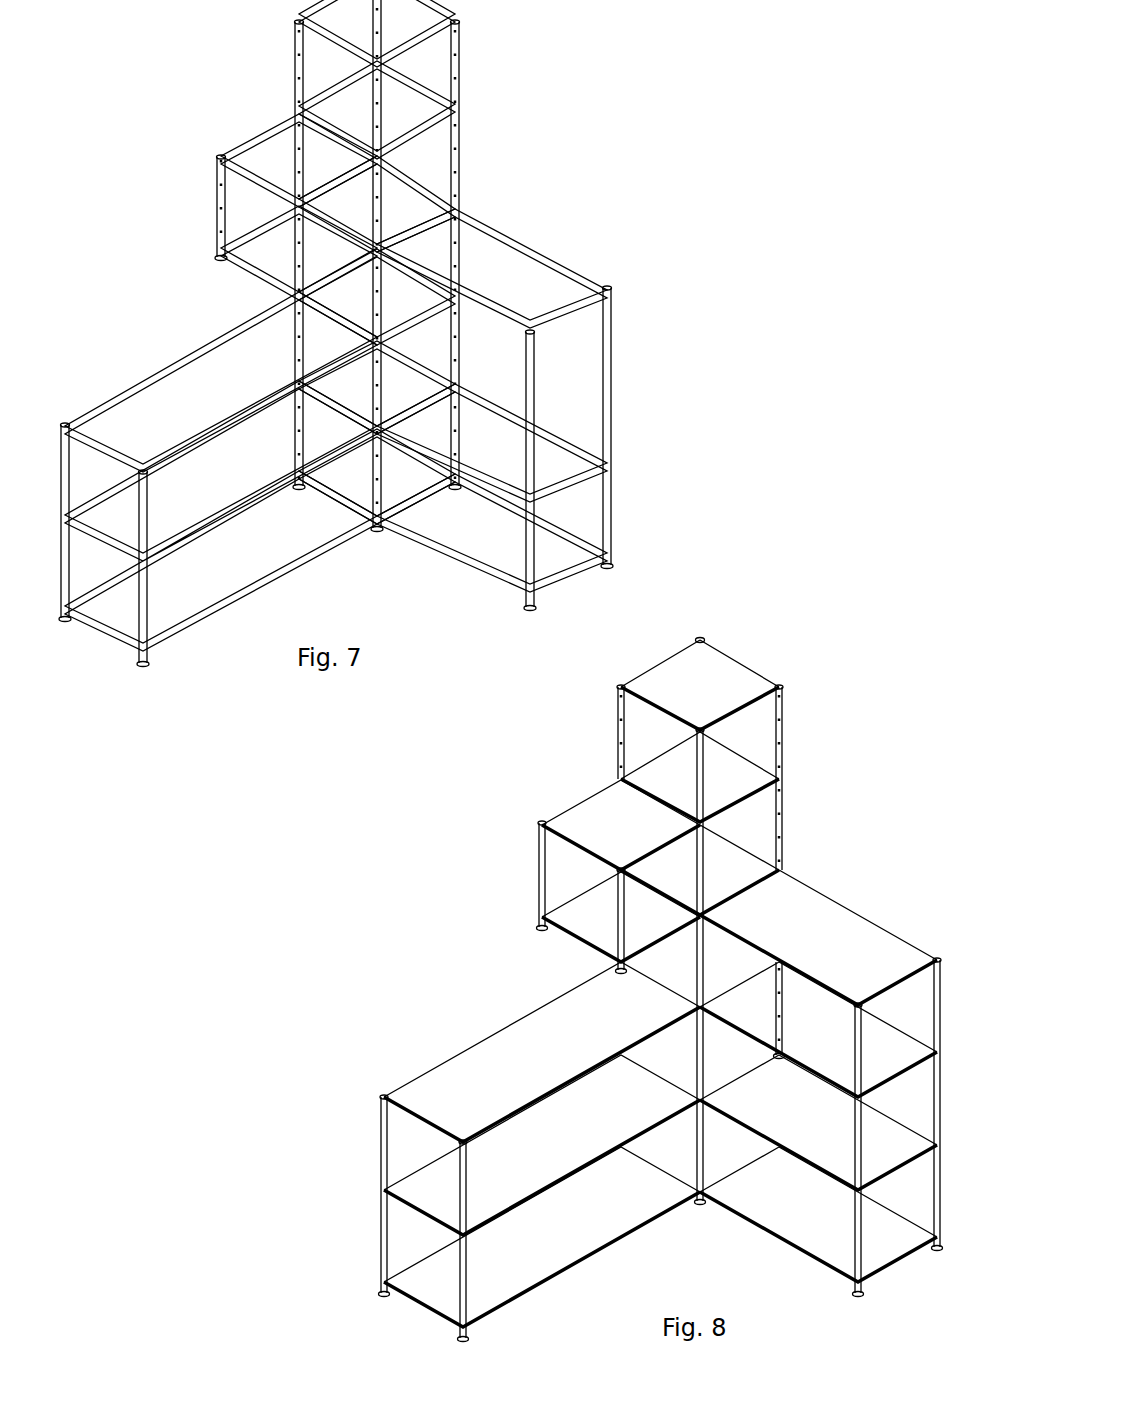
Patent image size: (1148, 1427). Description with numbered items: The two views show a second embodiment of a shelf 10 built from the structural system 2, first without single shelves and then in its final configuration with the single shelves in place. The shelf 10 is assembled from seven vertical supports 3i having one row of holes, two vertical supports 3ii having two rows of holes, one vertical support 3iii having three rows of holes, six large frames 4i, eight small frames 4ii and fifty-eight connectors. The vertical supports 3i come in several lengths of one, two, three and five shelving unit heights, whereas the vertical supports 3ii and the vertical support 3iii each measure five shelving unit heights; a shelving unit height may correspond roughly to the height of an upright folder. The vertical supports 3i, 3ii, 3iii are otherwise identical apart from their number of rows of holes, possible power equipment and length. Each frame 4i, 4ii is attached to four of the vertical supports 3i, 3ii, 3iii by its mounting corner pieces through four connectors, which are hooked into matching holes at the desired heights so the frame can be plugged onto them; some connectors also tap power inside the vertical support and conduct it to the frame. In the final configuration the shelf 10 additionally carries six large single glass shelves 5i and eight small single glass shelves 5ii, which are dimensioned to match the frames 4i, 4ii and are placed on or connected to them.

In FIG. 7, the structural system 2 is at (175, 668).
In FIG. 8, the structural system 2 is at (457, 1149).
In FIG. 7, the vertical support with one row of holes 3i is at (607, 334).
In FIG. 8, the vertical support with one row of holes 3i is at (381, 1116).
In FIG. 7, the vertical support with two rows of holes 3ii is at (456, 68).
In FIG. 8, the vertical support with two rows of holes 3ii is at (620, 751).
In FIG. 7, the vertical support with three rows of holes 3iii is at (378, 530).
In FIG. 8, the vertical support with three rows of holes 3iii is at (700, 1205).
In FIG. 7, the large frame 4i is at (548, 263).
In FIG. 7, the small frame 4ii is at (262, 142).
In FIG. 8, the large single glass shelf 5i is at (494, 1052).
In FIG. 8, the small single glass shelf 5ii is at (734, 680).
In FIG. 7, the shelf 10 is at (388, 382).
In FIG. 8, the shelf 10 is at (578, 964).